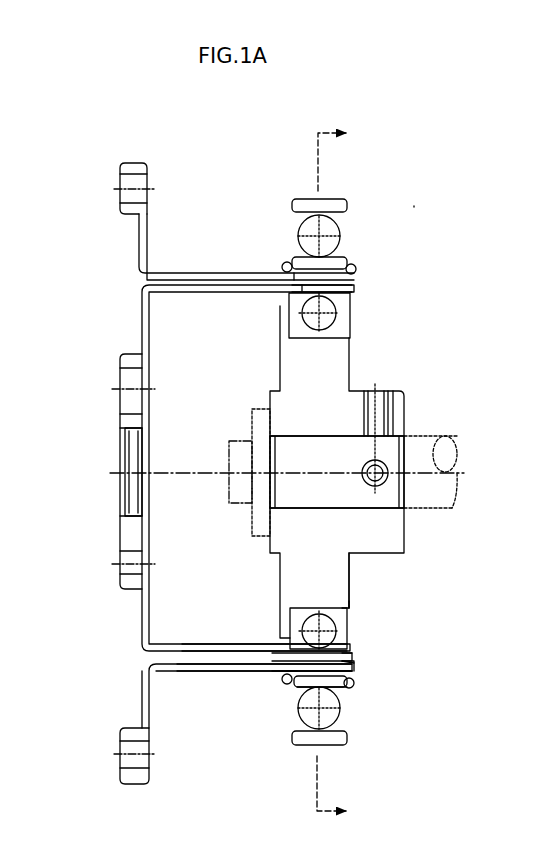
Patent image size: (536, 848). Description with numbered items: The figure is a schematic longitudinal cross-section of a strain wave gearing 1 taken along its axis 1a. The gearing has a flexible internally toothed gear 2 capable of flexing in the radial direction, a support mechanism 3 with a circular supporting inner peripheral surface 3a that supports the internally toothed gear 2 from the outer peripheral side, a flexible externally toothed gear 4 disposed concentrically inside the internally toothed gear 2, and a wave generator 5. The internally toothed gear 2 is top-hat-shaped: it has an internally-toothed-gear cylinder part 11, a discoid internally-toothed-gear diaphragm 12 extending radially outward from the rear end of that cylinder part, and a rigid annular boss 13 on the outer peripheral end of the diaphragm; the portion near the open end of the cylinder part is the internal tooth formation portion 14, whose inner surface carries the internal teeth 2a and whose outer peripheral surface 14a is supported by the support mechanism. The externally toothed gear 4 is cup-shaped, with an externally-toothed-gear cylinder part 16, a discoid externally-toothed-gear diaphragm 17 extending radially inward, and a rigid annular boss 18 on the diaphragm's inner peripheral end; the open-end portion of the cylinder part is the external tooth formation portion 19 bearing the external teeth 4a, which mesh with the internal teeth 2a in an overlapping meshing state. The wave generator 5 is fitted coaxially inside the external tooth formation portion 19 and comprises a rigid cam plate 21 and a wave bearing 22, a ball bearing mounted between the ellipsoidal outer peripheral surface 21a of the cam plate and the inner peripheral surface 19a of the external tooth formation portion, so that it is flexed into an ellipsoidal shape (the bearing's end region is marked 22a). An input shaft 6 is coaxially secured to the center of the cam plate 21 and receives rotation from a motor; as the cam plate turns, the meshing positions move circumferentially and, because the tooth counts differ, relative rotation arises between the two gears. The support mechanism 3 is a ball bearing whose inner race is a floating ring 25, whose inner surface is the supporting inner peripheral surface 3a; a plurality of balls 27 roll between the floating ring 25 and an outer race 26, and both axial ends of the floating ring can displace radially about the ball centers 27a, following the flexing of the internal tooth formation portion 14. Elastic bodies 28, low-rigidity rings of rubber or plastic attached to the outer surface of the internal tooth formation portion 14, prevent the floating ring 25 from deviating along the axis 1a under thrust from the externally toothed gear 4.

The strain wave gearing 1 is at (412, 205).
The axis 1a is at (463, 473).
The internally toothed gear 2 is at (368, 270).
The internal teeth 2a is at (292, 281).
The support mechanism 3 is at (351, 237).
The supporting inner peripheral surface 3a is at (346, 660).
The externally toothed gear 4 is at (358, 288).
The external teeth 4a is at (300, 292).
The wave generator 5 is at (364, 366).
The input shaft 6 is at (426, 431).
The internally-toothed-gear cylinder part 11 is at (183, 671).
The internally-toothed-gear diaphragm 12 is at (139, 703).
The boss 13 is at (118, 775).
The internal tooth formation portion 14 is at (277, 671).
The outer peripheral surface 14a is at (290, 674).
The externally-toothed-gear cylinder part 16 is at (183, 643).
The externally-toothed-gear diaphragm 17 is at (141, 607).
The boss 18 is at (118, 538).
The external tooth formation portion 19 is at (277, 653).
The inner peripheral surface 19a is at (346, 651).
The cam plate 21 is at (349, 572).
The ellipsoidal outer peripheral surface 21a is at (349, 617).
The wave bearing 22 is at (348, 635).
The end of lower bearing 22a is at (351, 666).
The floating ring 25 is at (346, 686).
The outer race 26 is at (348, 741).
The balls 27 is at (343, 718).
The ball centers 27a is at (316, 707).
The elastic bodies 28 is at (351, 270).